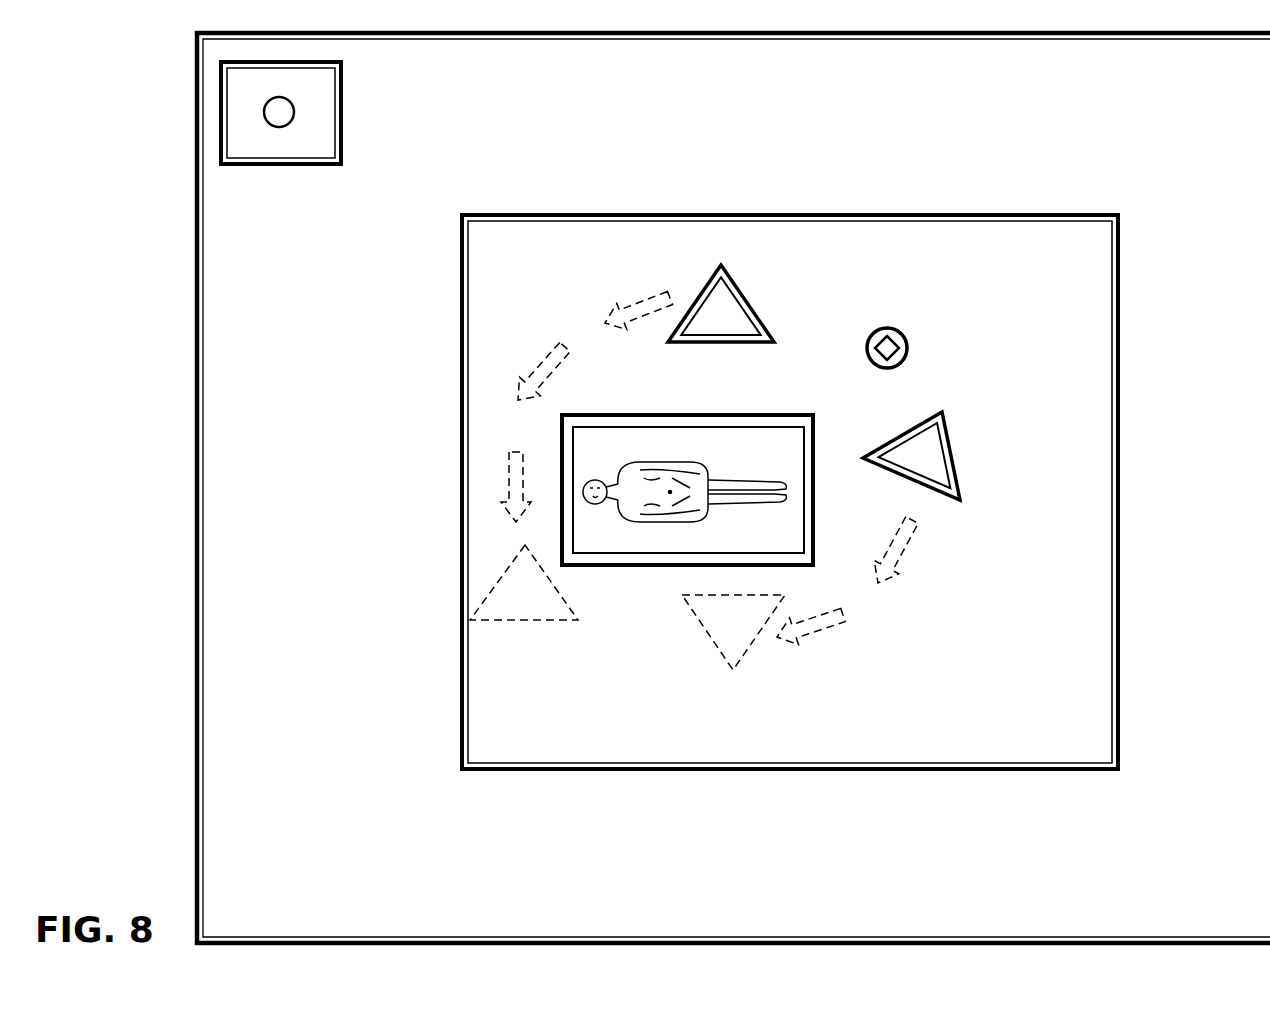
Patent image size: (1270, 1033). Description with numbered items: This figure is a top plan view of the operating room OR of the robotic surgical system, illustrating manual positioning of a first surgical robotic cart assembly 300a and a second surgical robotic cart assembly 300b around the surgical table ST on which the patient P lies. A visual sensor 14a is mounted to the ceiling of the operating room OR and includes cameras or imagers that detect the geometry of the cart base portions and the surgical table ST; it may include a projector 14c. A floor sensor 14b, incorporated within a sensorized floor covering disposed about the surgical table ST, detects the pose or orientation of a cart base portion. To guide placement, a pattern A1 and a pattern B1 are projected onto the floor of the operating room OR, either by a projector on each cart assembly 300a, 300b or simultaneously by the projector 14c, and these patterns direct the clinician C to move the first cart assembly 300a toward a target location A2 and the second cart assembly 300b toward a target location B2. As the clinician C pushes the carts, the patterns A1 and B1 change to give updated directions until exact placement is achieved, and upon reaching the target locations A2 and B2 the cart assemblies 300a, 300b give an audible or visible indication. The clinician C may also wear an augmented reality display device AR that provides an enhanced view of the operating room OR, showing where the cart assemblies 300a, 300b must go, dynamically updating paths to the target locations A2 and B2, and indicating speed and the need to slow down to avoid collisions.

The visual sensor 14a is at (345, 108).
The floor sensor 14b is at (1123, 332).
The projector 14c is at (276, 127).
The first surgical robotic cart assembly 300a is at (757, 296).
The second surgical robotic cart assembly 300b is at (962, 457).
The operating room OR is at (733, 488).
The augmented reality display device AR is at (897, 330).
The clinician C is at (896, 358).
The patient P is at (693, 480).
The surgical table ST is at (633, 568).
The pattern A1 is at (535, 355).
The target location A2 is at (530, 624).
The pattern B1 is at (899, 585).
The target location B2 is at (714, 650).